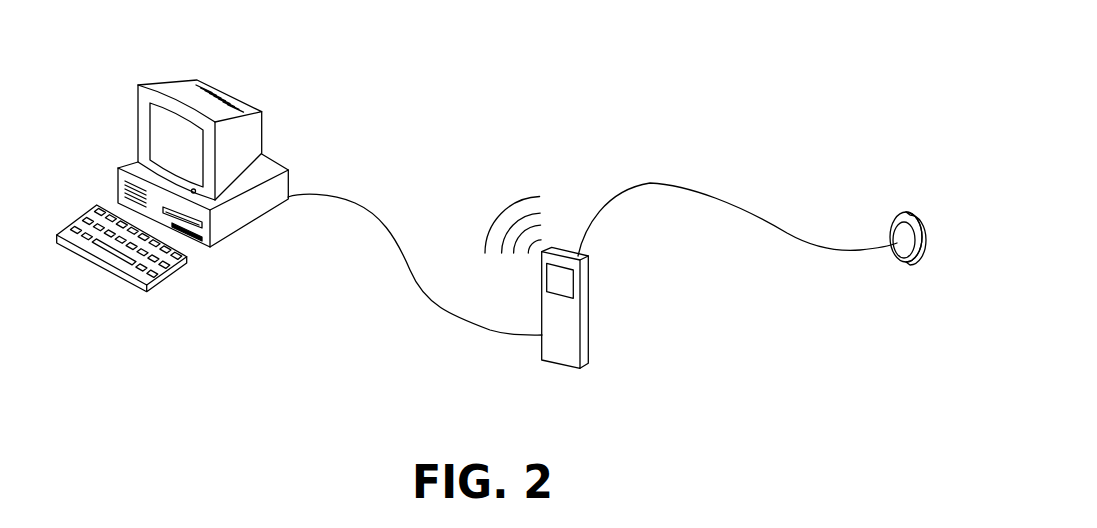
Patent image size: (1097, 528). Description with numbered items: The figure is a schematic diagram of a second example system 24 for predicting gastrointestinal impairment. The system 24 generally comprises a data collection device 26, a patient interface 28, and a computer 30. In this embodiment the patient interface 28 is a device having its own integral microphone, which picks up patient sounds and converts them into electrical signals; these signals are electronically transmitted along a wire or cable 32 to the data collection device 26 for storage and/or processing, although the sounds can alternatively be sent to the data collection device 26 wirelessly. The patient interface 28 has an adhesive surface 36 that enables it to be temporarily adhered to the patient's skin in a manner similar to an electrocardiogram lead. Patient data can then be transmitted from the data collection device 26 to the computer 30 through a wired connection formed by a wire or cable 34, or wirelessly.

The system 24 is at (721, 76).
The data collection device 26 is at (585, 332).
The patient interface 28 is at (903, 240).
The computer 30 is at (155, 88).
The wire or cable 32 is at (612, 200).
The wire or cable 34 is at (390, 227).
The adhesive surface 36 is at (923, 220).